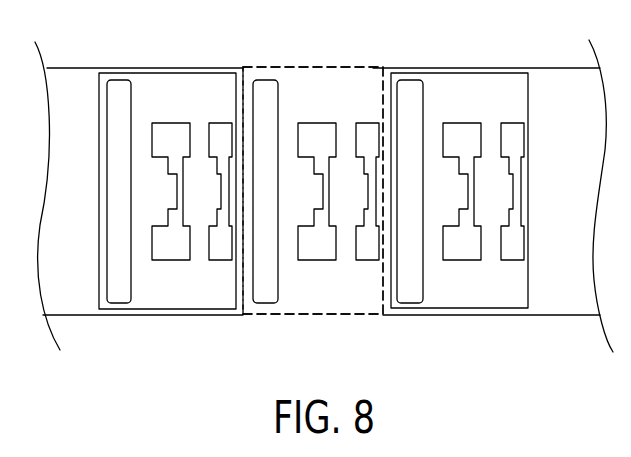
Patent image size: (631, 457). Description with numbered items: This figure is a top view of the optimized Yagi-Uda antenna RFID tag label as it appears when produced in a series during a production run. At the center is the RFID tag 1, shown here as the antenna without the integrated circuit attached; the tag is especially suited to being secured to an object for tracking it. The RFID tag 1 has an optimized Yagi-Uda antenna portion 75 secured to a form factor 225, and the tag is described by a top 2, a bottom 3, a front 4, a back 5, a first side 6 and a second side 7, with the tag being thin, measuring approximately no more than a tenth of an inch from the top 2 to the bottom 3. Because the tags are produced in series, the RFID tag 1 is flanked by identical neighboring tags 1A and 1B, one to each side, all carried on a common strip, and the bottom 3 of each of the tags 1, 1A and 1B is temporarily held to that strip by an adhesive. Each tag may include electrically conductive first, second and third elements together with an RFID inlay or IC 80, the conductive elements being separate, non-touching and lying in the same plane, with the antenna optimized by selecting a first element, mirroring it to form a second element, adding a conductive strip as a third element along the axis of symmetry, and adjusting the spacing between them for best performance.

The RFID inlay or IC 80 is at (194, 315).
The neighboring tag 1A is at (167, 309).
The neighboring tag 1B is at (458, 73).
The RFID tag 1 is at (292, 300).
The top 2 is at (353, 105).
The form factor 225 is at (320, 292).
The bottom 3 is at (373, 67).
The front 4 is at (354, 314).
The back 5 is at (270, 67).
The first side 6 is at (242, 88).
The second side 7 is at (383, 90).
The optimized Yagi-Uda antenna portion 75 is at (508, 260).